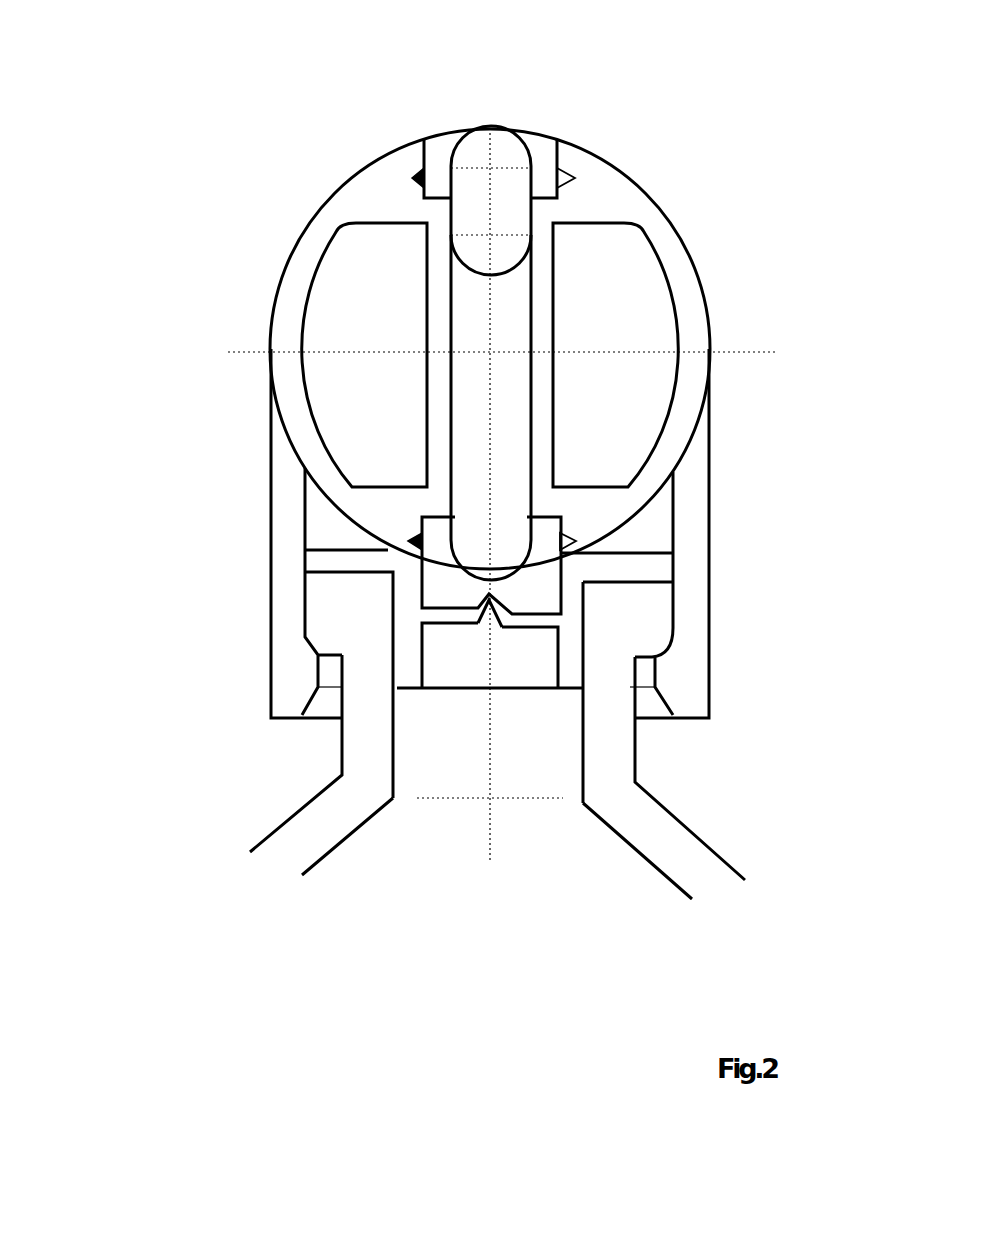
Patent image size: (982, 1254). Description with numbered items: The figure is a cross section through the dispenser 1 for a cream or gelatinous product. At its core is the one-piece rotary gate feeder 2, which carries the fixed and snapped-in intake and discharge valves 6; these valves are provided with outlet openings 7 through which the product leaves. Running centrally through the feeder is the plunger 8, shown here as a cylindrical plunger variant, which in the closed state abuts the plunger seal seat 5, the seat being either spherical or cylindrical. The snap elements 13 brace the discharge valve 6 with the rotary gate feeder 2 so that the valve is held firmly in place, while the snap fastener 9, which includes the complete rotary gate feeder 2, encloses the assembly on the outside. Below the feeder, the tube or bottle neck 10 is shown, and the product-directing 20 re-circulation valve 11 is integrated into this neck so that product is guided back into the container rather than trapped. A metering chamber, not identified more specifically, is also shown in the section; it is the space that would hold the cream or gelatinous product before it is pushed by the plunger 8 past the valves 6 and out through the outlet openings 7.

The dispenser 1 is at (684, 175).
The one-piece rotary gate feeder 2 is at (319, 230).
The plunger seal seat 5 is at (462, 553).
The intake and discharge valves 6 is at (536, 147).
The outlet openings 7 is at (465, 132).
The plunger 8 is at (502, 190).
The snap fastener 9 is at (715, 632).
The tube or bottle neck 10 is at (340, 817).
The re-circulation valve 11 is at (412, 592).
The snap elements 13 is at (412, 178).
The product-directing 20 is at (484, 628).